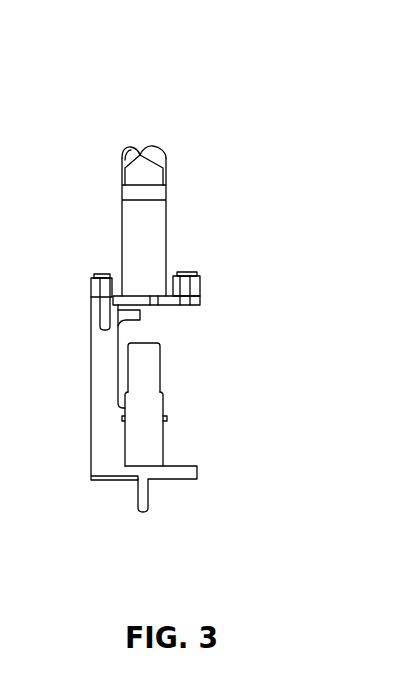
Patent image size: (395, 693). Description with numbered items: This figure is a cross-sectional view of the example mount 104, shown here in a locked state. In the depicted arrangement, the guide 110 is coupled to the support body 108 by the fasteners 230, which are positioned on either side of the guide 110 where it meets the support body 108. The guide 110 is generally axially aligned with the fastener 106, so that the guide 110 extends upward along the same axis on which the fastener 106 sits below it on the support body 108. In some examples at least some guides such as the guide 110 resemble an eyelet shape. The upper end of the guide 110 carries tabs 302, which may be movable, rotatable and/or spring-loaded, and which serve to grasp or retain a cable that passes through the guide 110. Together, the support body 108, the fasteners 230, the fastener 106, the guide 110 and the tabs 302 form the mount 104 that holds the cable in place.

The mount 104 is at (246, 75).
The tabs 302 is at (136, 143).
The guide 110 is at (166, 220).
The fasteners 230 is at (102, 274).
The support body 108 is at (102, 382).
The fastener 106 is at (164, 450).